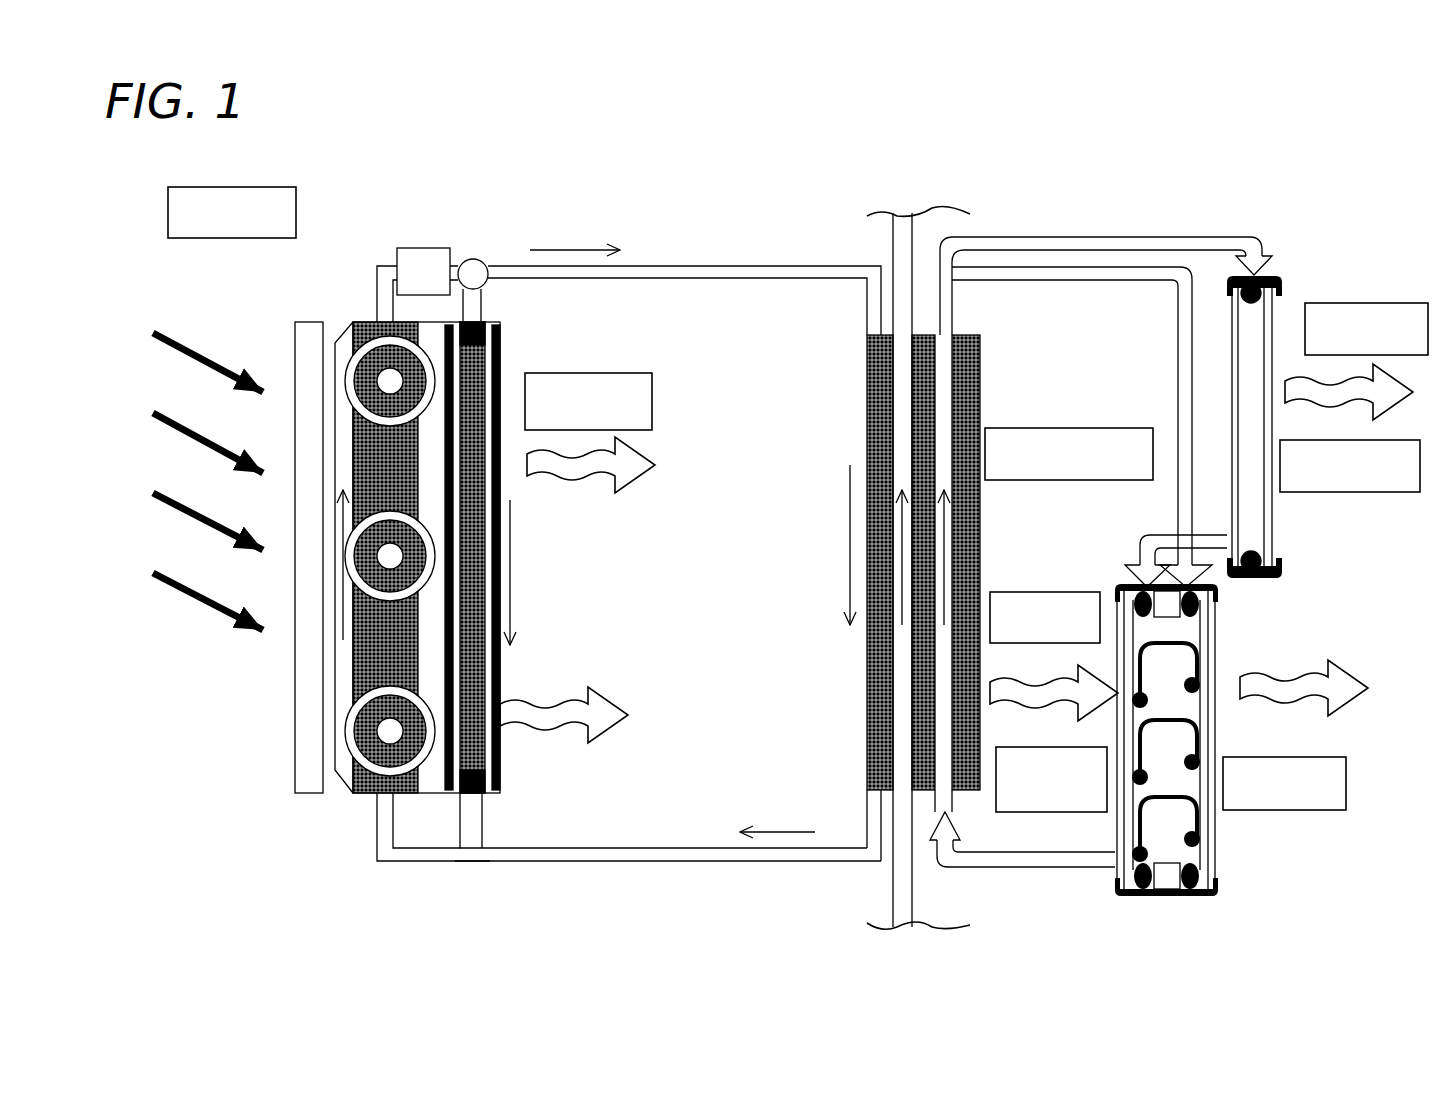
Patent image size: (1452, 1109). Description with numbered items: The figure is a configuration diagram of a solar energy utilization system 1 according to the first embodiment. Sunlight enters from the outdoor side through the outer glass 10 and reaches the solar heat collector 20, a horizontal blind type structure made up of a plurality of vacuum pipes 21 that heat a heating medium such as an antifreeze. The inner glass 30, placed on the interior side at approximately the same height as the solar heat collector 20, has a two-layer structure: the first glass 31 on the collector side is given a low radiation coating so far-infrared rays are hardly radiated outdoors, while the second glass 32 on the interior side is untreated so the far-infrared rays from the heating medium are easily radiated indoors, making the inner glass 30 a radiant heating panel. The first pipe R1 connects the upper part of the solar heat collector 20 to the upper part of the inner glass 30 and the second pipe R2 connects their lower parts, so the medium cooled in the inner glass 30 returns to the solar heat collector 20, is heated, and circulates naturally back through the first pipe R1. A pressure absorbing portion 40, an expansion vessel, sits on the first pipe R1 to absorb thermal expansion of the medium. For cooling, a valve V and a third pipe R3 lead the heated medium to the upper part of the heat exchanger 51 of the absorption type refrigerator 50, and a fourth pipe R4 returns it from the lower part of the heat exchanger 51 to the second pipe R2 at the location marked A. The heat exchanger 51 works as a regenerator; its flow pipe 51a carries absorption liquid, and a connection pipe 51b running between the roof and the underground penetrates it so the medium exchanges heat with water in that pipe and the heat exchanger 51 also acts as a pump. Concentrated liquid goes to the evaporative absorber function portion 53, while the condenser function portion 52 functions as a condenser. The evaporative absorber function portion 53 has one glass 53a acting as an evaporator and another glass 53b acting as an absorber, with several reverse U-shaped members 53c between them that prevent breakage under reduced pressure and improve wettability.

The solar energy utilization system 1 is at (1162, 207).
The outer glass 10 is at (300, 357).
The solar heat collector 20 is at (368, 312).
The vacuum pipes 21 is at (352, 393).
The inner glass 30 is at (538, 557).
The first glass 31 is at (455, 655).
The second glass 32 is at (493, 488).
The pressure absorbing portion 40 is at (430, 256).
The valve V is at (477, 268).
The absorption type refrigerator 50 is at (1240, 228).
The heat exchanger 51 is at (882, 410).
The flow pipe 51a is at (953, 308).
The connection pipe 51b is at (897, 252).
The condenser function portion 52 is at (1283, 318).
The evaporative absorber function portion 53 is at (1194, 741).
The glass 53a is at (1122, 590).
The glass 53b is at (1207, 670).
The U-shaped members 53c is at (1182, 640).
The first pipe R1 is at (383, 266).
The second pipe R2 is at (473, 810).
The third pipe R3 is at (700, 266).
The fourth pipe R4 is at (703, 853).
The location A is at (470, 850).